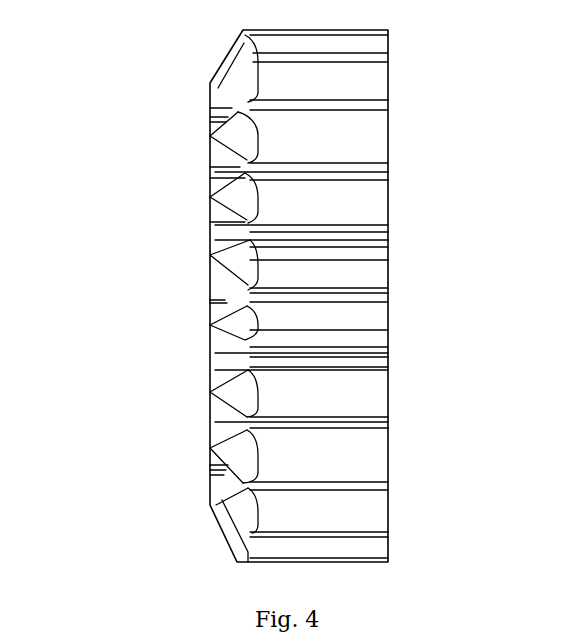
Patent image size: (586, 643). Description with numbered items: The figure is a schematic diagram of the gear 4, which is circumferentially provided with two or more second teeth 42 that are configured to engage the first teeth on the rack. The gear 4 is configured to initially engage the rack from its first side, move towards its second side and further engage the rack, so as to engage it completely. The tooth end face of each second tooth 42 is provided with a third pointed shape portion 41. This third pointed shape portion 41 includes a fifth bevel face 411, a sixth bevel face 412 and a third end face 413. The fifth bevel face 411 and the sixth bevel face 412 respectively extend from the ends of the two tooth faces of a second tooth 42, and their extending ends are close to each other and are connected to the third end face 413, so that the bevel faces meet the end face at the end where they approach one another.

The gear 4 is at (420, 201).
The third pointed shape portion 41 is at (122, 280).
The fifth bevel face 411 is at (233, 323).
The sixth bevel face 412 is at (250, 338).
The third end face 413 is at (250, 352).
The second tooth 42 is at (365, 258).